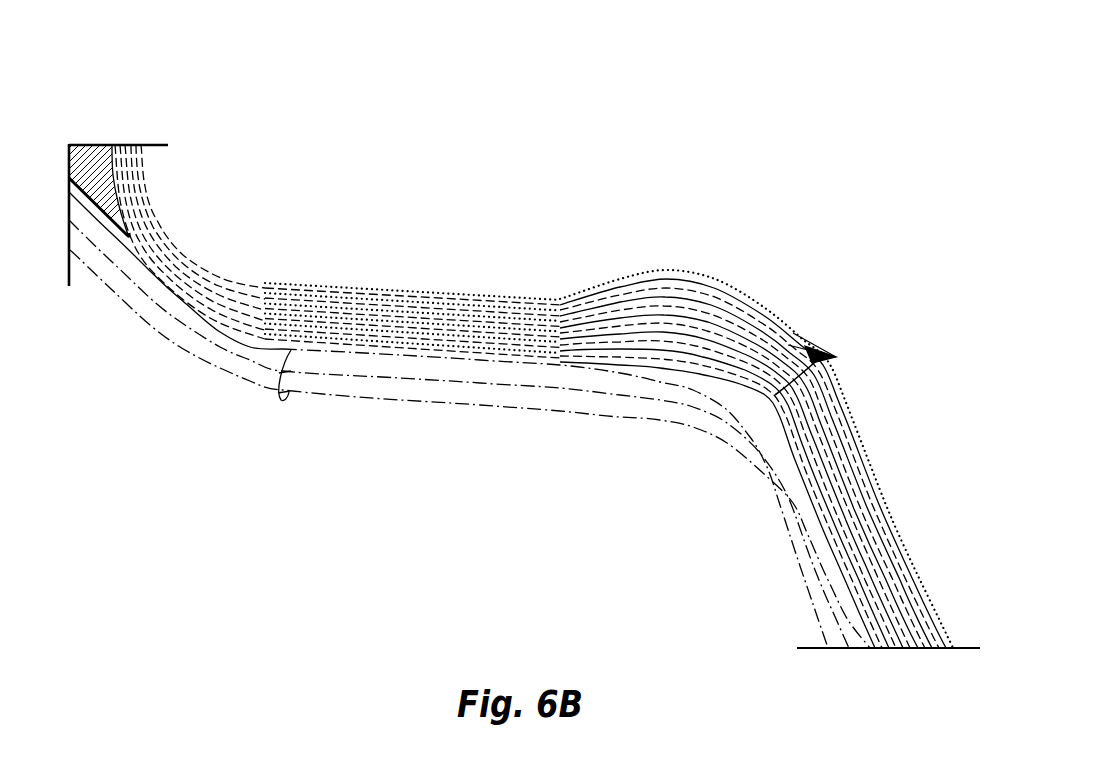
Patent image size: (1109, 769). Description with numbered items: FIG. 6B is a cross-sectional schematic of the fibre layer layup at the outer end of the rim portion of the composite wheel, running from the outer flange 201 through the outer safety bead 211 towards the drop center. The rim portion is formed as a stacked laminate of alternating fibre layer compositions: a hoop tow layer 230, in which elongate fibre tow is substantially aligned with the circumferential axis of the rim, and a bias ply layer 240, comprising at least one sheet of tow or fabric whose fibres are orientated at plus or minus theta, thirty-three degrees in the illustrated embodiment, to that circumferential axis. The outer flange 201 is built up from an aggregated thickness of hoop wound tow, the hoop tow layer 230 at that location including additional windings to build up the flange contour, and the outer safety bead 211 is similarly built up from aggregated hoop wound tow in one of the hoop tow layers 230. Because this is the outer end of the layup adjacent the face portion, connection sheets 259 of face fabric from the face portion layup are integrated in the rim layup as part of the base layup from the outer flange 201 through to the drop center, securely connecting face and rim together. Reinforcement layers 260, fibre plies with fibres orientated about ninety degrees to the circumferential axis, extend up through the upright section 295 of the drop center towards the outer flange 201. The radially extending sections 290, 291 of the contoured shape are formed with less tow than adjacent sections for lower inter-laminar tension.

The outer flange 201 is at (100, 78).
The outer safety bead 211 is at (705, 263).
The hoop tow layer 230 is at (91, 156).
The bias ply layer 240 is at (188, 250).
The connection sheets 259 is at (285, 401).
The reinforcement layer 260 is at (836, 357).
The radially extending section 290 is at (178, 192).
The radially extending section 291 is at (865, 438).
The upright section of the drop center 295 is at (903, 533).